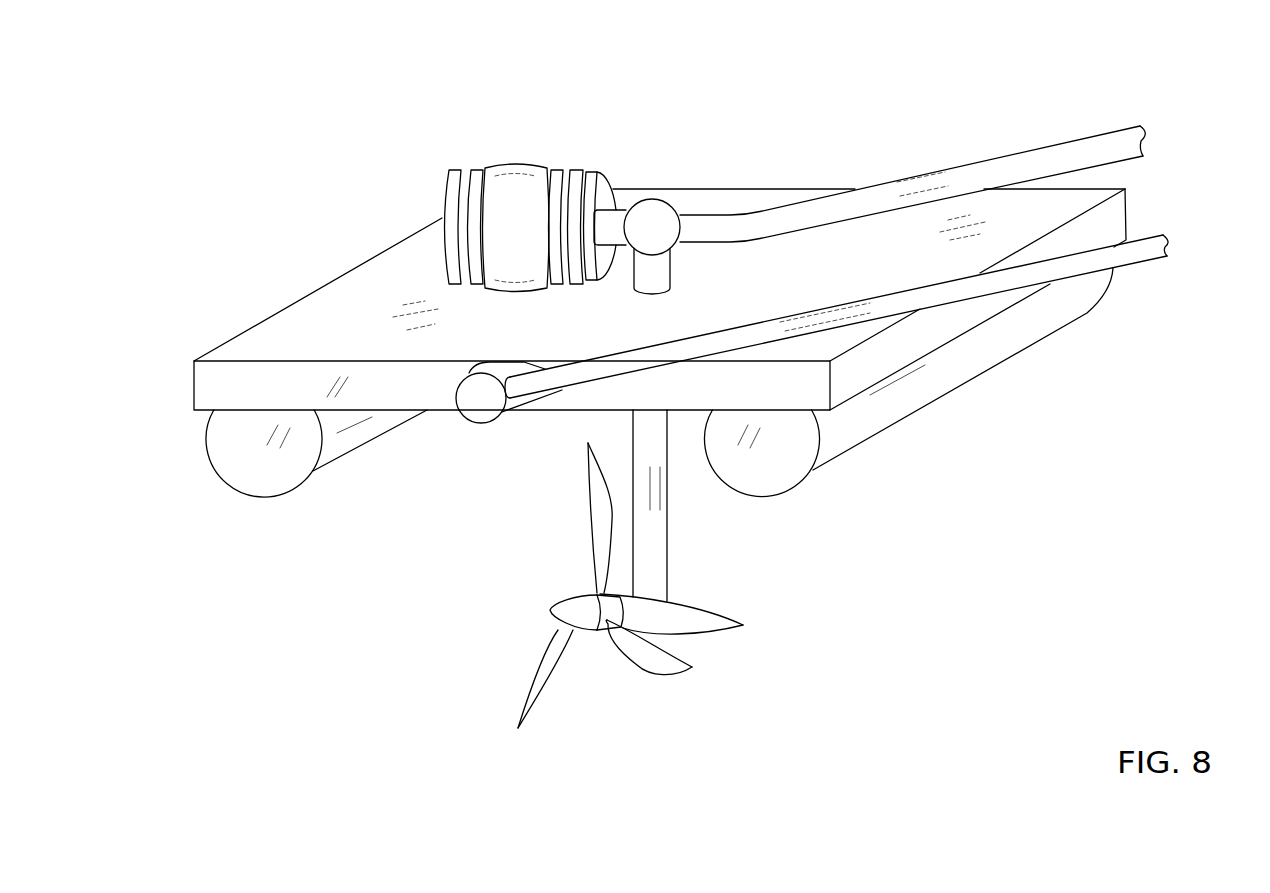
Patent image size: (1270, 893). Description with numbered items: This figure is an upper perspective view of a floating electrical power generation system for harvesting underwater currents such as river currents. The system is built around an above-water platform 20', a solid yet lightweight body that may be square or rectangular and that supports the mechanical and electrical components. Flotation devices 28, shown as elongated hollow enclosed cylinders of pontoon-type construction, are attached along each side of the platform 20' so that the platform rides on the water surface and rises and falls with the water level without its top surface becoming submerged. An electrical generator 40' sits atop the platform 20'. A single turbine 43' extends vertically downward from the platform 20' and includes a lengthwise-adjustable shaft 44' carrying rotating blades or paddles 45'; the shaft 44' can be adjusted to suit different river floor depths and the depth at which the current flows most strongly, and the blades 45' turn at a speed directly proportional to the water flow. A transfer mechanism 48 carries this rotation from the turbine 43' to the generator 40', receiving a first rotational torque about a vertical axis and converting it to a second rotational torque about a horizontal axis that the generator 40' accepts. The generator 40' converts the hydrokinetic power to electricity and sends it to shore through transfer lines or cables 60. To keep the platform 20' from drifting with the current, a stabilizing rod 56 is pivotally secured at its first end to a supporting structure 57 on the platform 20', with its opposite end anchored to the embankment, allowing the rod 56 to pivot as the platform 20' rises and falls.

The platform 20' is at (660, 299).
The flotation devices 28 is at (317, 473).
The electrical generator 40' is at (536, 185).
The transfer mechanism 48 is at (652, 228).
The transfer lines or cables 60 is at (1037, 148).
The stabilizing rod 56 is at (1147, 262).
The supporting structure 57 is at (481, 398).
The turbine 43' is at (500, 605).
The shaft 44' is at (718, 506).
The blades 45' is at (630, 600).